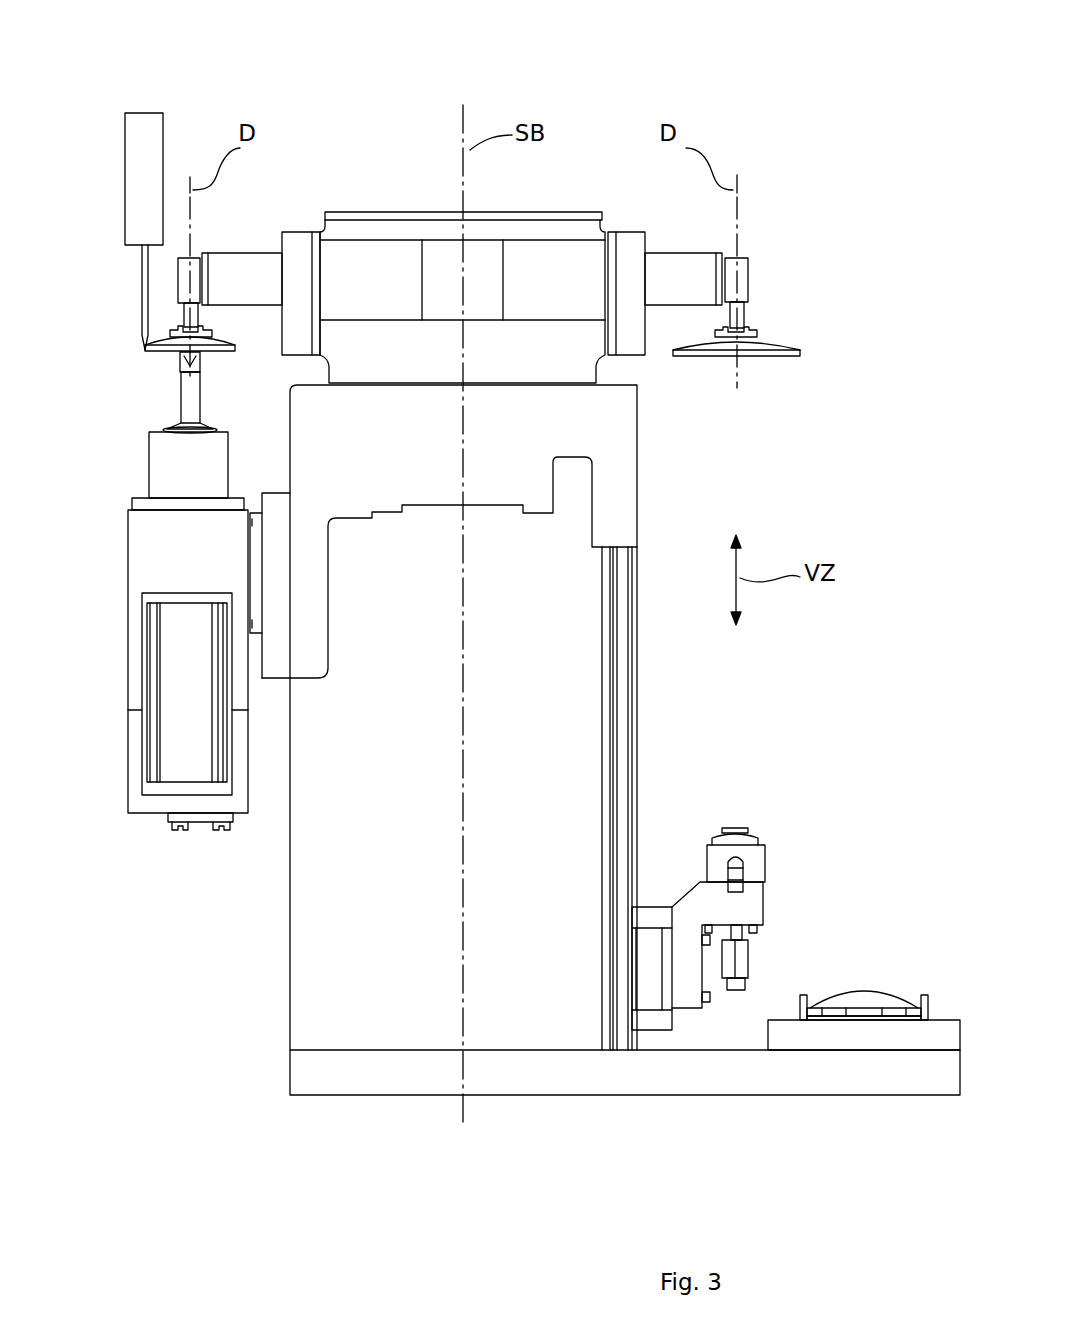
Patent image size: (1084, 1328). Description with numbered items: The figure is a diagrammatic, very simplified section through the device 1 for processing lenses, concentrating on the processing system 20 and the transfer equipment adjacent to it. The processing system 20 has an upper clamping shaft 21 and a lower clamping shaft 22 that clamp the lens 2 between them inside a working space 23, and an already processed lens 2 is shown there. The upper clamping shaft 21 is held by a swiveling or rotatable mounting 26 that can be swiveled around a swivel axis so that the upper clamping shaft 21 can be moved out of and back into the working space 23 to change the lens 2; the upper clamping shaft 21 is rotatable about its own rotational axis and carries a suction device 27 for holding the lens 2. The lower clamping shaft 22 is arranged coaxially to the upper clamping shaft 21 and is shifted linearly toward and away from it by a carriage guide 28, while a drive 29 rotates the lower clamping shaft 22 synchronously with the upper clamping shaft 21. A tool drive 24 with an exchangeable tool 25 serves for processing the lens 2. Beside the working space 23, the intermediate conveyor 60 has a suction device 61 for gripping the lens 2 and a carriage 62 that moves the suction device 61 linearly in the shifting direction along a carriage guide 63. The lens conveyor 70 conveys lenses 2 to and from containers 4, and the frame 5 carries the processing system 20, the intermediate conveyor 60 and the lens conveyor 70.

The device 1 is at (827, 62).
The lens 2 is at (170, 348).
The container 4 is at (816, 998).
The frame 5 is at (754, 1075).
The processing system 20 is at (462, 232).
The upper clamping shaft 21 is at (189, 312).
The lower clamping shaft 22 is at (190, 398).
The working space 23 is at (106, 538).
The tool drive 24 is at (133, 150).
The tool 25 is at (145, 298).
The mounting 26 is at (405, 212).
The suction device 27 is at (205, 329).
The carriage guide 28 is at (250, 570).
The drive 29 is at (180, 655).
The intermediate conveyor 60 is at (730, 845).
The suction device 61 is at (745, 830).
The carriage 62 is at (651, 915).
The carriage guide 63 is at (630, 670).
The lens conveyor 70 is at (853, 1045).